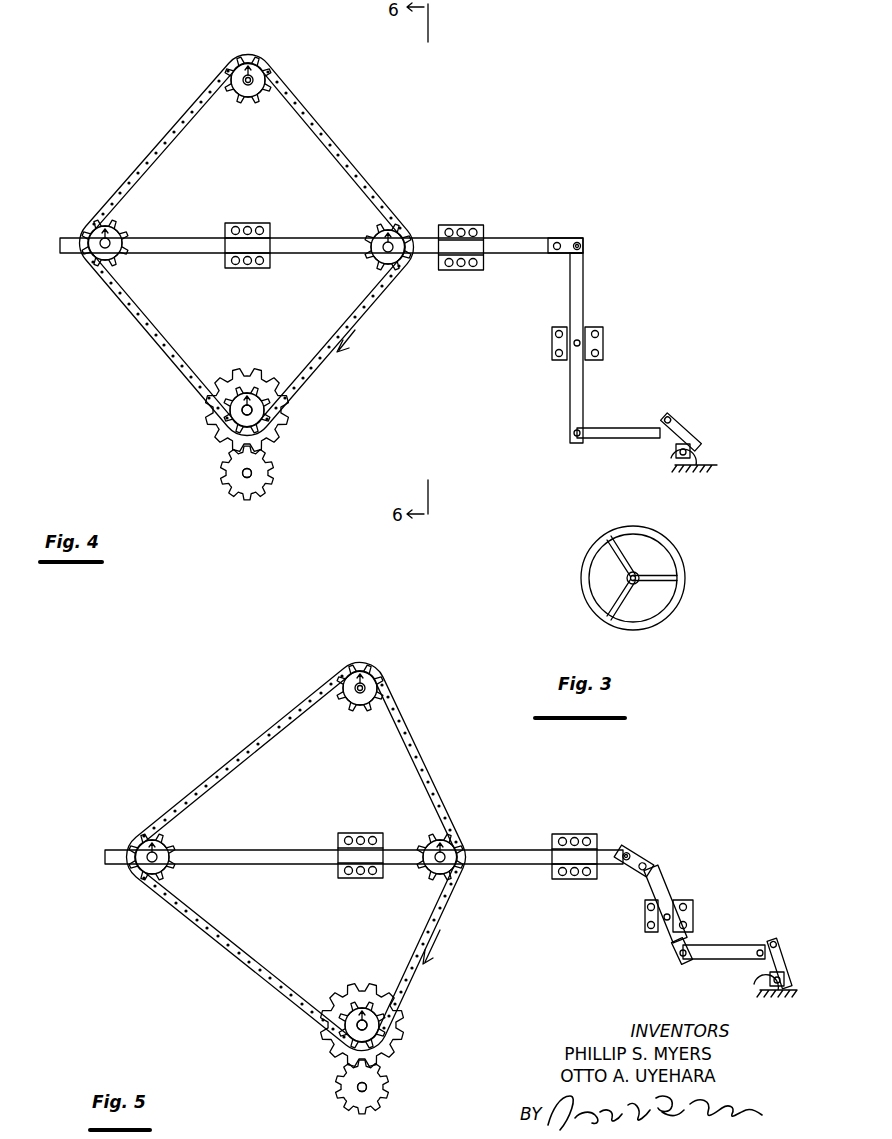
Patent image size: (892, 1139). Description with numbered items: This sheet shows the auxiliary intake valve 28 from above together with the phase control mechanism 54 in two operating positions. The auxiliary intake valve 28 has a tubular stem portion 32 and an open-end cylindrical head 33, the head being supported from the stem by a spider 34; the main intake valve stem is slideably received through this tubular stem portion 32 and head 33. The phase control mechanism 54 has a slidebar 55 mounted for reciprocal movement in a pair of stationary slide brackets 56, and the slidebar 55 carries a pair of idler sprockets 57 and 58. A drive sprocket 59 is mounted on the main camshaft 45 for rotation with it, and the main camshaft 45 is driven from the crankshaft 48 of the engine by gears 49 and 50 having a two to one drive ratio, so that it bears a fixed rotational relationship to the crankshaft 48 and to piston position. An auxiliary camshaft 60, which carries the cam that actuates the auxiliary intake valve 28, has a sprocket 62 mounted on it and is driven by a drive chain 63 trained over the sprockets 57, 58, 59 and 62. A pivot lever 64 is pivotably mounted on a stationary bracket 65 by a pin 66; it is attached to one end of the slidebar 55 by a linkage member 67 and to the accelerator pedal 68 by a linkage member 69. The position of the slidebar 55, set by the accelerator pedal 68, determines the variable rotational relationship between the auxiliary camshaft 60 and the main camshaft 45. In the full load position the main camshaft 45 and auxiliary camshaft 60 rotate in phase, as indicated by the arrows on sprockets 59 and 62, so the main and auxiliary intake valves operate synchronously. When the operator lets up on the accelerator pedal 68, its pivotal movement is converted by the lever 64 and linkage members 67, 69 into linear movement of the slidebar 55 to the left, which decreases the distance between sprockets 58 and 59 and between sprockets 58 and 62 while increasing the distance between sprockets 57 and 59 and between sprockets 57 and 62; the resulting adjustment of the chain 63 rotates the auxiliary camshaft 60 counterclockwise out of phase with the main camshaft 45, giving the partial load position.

In FIG. 3, the auxiliary intake valve 28 is at (633, 564).
In FIG. 3, the tubular stem portion 32 is at (636, 572).
In FIG. 3, the cylindrical head 33 is at (683, 553).
In FIG. 3, the spider 34 is at (661, 578).
In FIG. 4, the main camshaft 45 is at (268, 426).
In FIG. 5, the main camshaft 45 is at (375, 1025).
In FIG. 4, the crankshaft 48 is at (243, 483).
In FIG. 5, the crankshaft 48 is at (352, 1089).
In FIG. 4, the gear 49 is at (229, 376).
In FIG. 5, the gear 49 is at (342, 988).
In FIG. 4, the gear 50 is at (261, 495).
In FIG. 5, the gear 50 is at (383, 1105).
In FIG. 4, the phase control mechanism 54 is at (592, 239).
In FIG. 5, the phase control mechanism 54 is at (643, 845).
In FIG. 4, the slidebar 55 is at (183, 237).
In FIG. 5, the slidebar 55 is at (228, 848).
In FIG. 4, the slide bracket 56 is at (250, 222).
In FIG. 5, the slide bracket 56 is at (355, 832).
In FIG. 4, the idler sprocket 57 is at (94, 230).
In FIG. 5, the idler sprocket 57 is at (141, 838).
In FIG. 4, the idler sprocket 58 is at (396, 228).
In FIG. 5, the idler sprocket 58 is at (458, 845).
In FIG. 4, the drive sprocket 59 is at (237, 414).
In FIG. 5, the drive sprocket 59 is at (345, 1033).
In FIG. 4, the auxiliary camshaft 60 is at (240, 67).
In FIG. 5, the auxiliary camshaft 60 is at (356, 672).
In FIG. 4, the sprocket 62 is at (257, 63).
In FIG. 5, the sprocket 62 is at (369, 677).
In FIG. 4, the drive chain 63 is at (152, 152).
In FIG. 5, the drive chain 63 is at (228, 760).
In FIG. 4, the pivot lever 64 is at (584, 308).
In FIG. 5, the pivot lever 64 is at (666, 890).
In FIG. 4, the stationary bracket 65 is at (604, 341).
In FIG. 5, the stationary bracket 65 is at (694, 912).
In FIG. 4, the pin 66 is at (573, 348).
In FIG. 5, the pin 66 is at (663, 932).
In FIG. 4, the linkage member 67 is at (554, 259).
In FIG. 5, the linkage member 67 is at (628, 872).
In FIG. 4, the accelerator pedal 68 is at (684, 420).
In FIG. 5, the accelerator pedal 68 is at (775, 940).
In FIG. 4, the linkage member 69 is at (609, 440).
In FIG. 5, the linkage member 69 is at (712, 946).